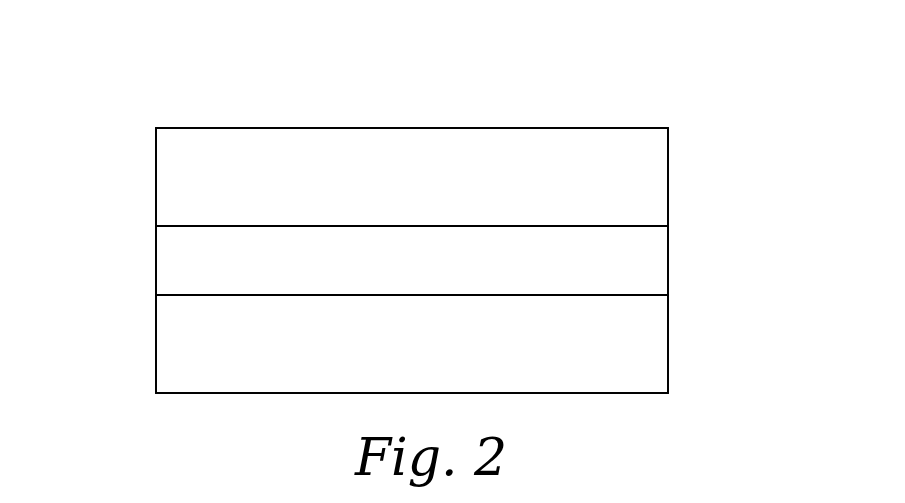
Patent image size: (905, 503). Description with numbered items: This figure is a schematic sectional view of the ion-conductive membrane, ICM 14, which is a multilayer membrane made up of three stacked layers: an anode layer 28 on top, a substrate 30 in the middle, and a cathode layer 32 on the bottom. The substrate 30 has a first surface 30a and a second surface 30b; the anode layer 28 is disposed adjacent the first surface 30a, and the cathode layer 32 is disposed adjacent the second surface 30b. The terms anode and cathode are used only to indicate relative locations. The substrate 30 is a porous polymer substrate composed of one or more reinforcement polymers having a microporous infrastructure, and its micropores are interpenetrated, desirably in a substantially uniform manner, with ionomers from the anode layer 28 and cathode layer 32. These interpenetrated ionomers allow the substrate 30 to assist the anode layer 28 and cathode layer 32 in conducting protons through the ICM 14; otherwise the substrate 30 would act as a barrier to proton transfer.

The ion-conductive membrane (ICM) 14 is at (210, 89).
The anode layer 28 is at (648, 188).
The substrate 30 is at (648, 266).
The first surface 30a is at (183, 225).
The second surface 30b is at (185, 297).
The cathode layer 32 is at (655, 351).